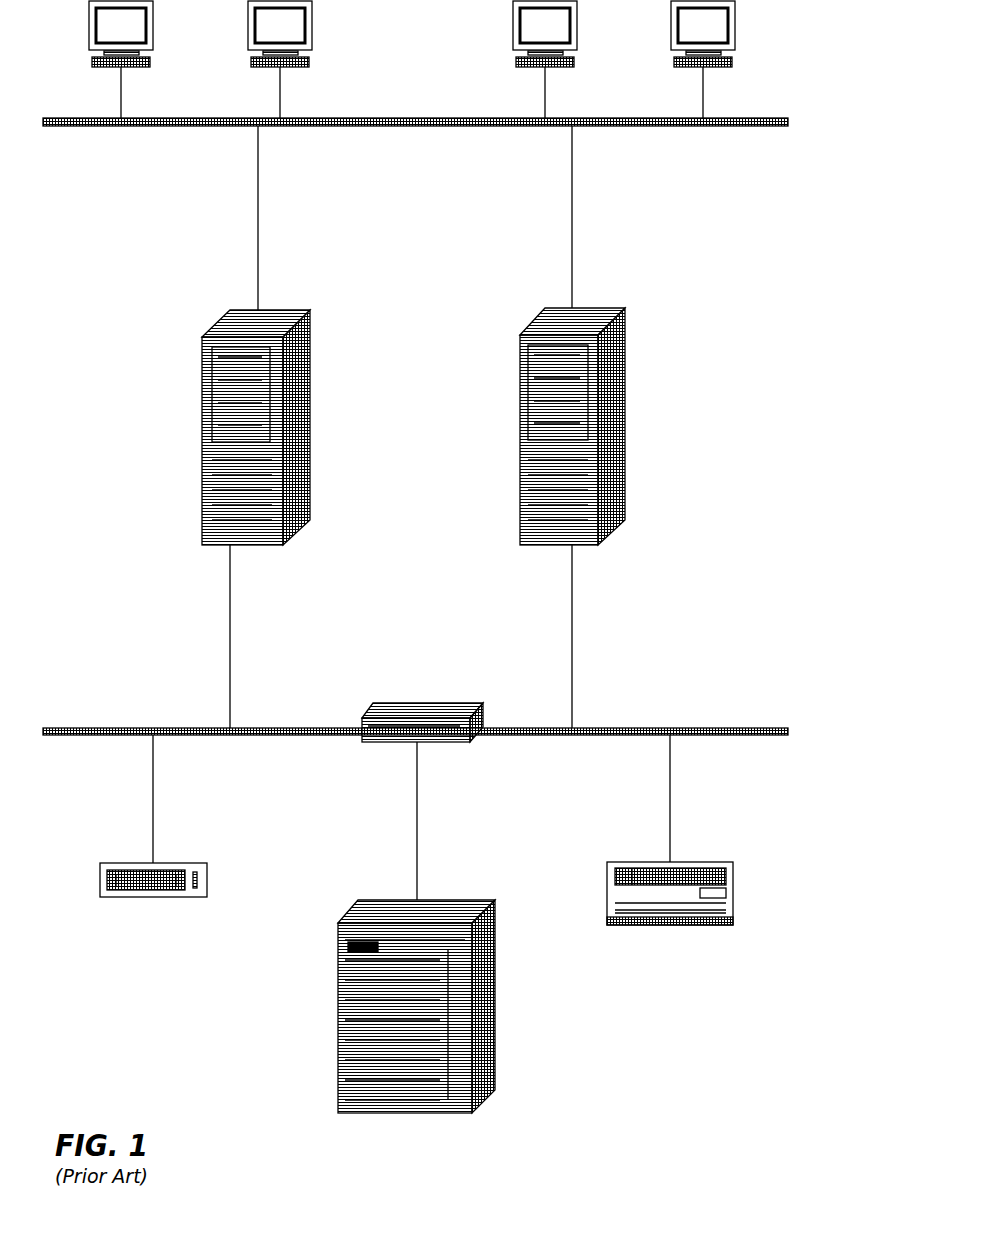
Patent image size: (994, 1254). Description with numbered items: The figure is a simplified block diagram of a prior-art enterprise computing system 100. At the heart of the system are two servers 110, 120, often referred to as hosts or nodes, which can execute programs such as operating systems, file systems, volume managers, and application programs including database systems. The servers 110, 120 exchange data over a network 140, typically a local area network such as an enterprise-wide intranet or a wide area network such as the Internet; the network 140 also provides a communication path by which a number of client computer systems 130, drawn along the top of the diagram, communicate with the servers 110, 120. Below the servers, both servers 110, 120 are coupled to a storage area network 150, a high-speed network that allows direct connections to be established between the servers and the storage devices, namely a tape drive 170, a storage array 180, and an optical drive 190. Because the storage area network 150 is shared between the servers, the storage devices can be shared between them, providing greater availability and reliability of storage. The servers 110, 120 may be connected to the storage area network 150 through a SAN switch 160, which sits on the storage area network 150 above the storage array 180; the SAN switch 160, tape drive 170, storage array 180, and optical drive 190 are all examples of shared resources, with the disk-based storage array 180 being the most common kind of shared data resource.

The enterprise computing system 100 is at (714, 1135).
The server 110 is at (202, 415).
The server 120 is at (625, 405).
The client computer systems 130 is at (735, 28).
The network 140 is at (645, 127).
The storage area network (SAN) 150 is at (705, 727).
The SAN switch 160 is at (375, 742).
The tape drive 170 is at (100, 880).
The storage array 180 is at (495, 1005).
The optical drive 190 is at (733, 890).